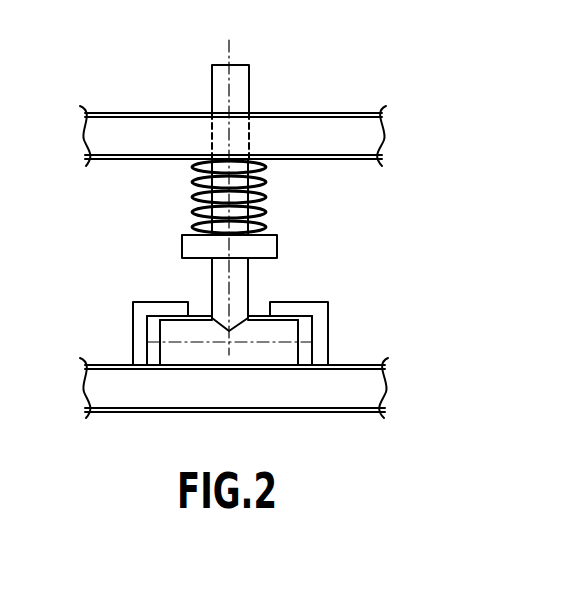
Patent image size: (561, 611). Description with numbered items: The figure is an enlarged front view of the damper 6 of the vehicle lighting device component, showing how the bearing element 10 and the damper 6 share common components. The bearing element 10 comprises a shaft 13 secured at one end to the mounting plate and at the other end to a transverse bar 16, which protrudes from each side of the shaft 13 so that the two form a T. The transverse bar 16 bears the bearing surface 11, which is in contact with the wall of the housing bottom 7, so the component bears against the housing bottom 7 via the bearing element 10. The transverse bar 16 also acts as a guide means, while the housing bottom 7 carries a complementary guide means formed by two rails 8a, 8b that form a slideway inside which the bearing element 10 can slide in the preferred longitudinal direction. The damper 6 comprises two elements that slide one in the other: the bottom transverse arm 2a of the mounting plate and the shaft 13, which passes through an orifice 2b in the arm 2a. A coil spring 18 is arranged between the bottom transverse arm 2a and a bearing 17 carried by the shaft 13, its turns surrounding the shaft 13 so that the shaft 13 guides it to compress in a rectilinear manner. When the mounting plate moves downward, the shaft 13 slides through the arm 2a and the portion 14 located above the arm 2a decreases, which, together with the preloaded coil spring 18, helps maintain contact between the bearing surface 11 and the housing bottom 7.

The bottom transverse arm 2a is at (312, 115).
The orifice 2b is at (212, 140).
The damper 6 is at (157, 232).
The housing bottom 7 is at (133, 390).
The rail 8a is at (133, 320).
The rail 8b is at (320, 330).
The bearing element 10 is at (252, 284).
The bearing surface 11 is at (262, 368).
The shaft 13 is at (215, 273).
The portion of the shaft located above the arm 14 is at (243, 76).
The transverse bar 16 is at (290, 333).
The bearing 17 is at (262, 247).
The coil spring 18 is at (255, 184).